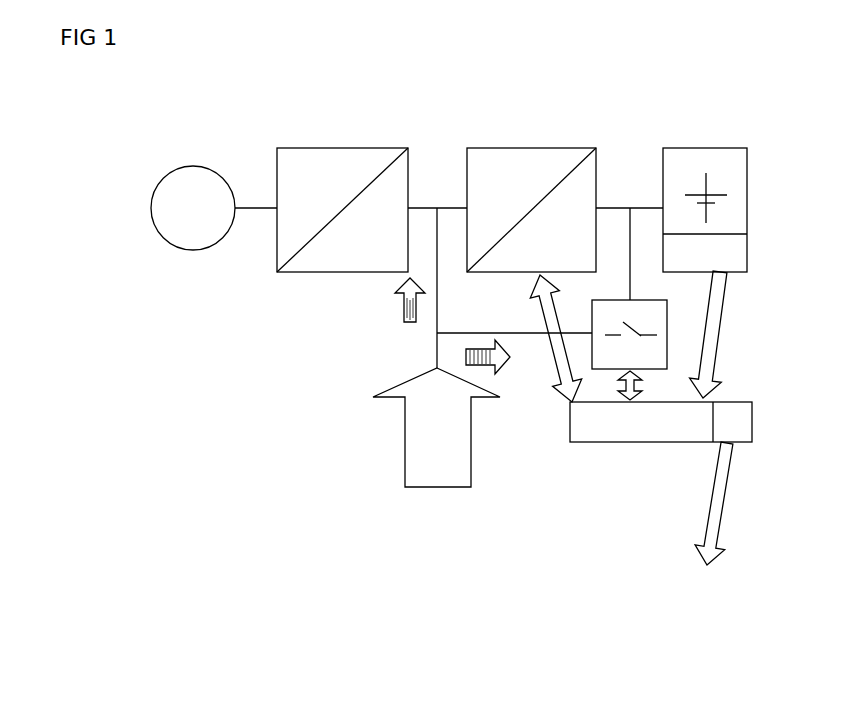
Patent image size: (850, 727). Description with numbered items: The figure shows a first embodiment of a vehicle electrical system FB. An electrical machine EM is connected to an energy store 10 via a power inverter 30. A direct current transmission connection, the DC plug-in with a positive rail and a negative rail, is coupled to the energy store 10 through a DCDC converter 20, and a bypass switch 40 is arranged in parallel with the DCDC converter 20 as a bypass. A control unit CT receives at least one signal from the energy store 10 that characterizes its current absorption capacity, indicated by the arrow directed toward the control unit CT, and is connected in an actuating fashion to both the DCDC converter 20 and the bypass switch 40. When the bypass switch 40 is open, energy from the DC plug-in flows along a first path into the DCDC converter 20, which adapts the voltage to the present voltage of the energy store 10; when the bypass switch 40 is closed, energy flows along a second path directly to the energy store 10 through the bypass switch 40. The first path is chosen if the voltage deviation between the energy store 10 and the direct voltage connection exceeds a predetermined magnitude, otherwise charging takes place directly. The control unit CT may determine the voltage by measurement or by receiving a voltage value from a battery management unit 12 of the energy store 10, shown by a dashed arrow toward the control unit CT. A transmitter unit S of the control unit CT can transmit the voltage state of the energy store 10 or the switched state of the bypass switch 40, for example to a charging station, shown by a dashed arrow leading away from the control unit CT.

The electrical machine EM is at (180, 166).
The power inverter 30 is at (340, 148).
The DCDC converter 20 is at (528, 148).
The energy store 10 is at (706, 158).
The battery management unit 12 is at (745, 250).
The bypass switch 40 is at (660, 318).
The transmitter unit S is at (740, 422).
The control unit CT is at (613, 443).
The vehicle electrical system FB is at (405, 556).